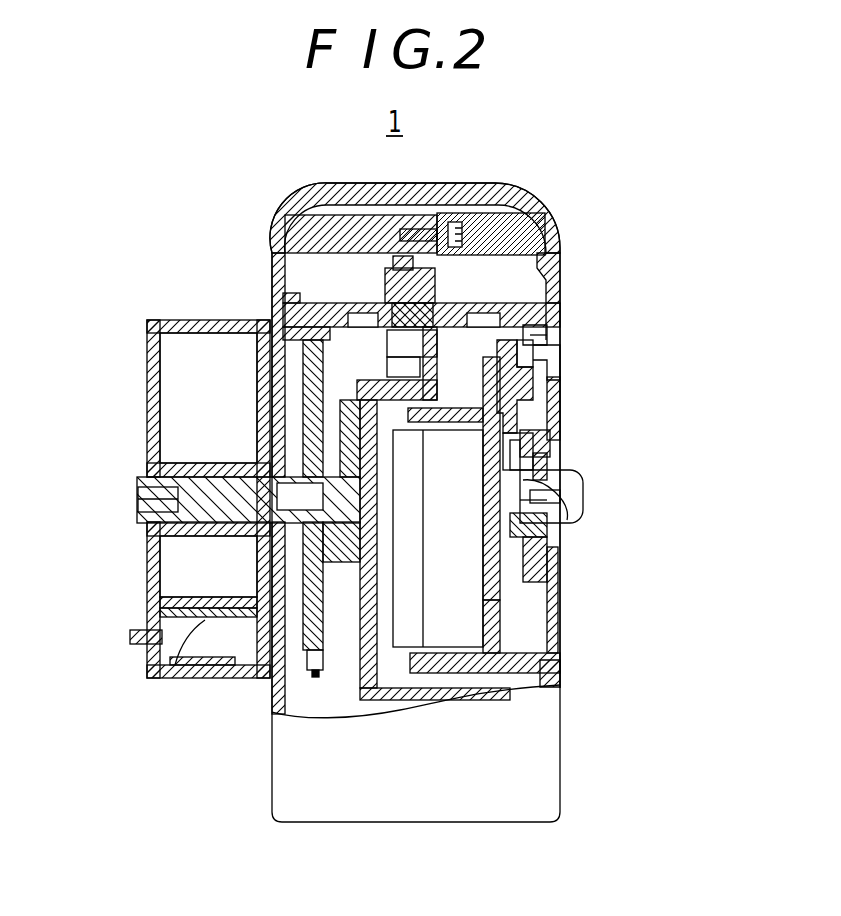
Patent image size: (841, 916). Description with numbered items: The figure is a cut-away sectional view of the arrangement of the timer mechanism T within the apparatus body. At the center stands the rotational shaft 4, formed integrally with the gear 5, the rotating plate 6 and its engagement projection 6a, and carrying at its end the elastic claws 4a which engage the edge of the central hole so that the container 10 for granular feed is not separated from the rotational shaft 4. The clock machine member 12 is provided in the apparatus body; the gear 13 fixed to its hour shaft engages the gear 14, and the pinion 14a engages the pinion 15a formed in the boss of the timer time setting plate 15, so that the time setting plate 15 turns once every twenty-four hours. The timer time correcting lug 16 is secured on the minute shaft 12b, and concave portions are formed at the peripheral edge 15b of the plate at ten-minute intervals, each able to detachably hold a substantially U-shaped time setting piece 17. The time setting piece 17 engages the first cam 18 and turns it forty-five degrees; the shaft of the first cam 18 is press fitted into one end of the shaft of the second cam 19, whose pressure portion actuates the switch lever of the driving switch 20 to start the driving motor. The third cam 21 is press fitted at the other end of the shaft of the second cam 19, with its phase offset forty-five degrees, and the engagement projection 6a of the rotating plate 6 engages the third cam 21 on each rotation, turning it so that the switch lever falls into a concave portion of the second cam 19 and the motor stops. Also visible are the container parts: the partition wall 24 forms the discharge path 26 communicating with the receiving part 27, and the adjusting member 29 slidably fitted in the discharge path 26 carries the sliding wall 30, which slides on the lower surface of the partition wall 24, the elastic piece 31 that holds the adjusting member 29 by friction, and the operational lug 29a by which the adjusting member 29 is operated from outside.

The rotational shaft 4 is at (197, 483).
The elastic claws 4a is at (137, 496).
The gear 5 is at (328, 582).
The rotating plate 6 is at (280, 674).
The engagement projection 6a is at (320, 678).
The container 10 is at (155, 318).
The clock machine member 12 is at (430, 618).
The minute shaft 12b is at (547, 540).
The gear 13 is at (548, 573).
The gear 14 is at (560, 385).
The pinion 14a is at (557, 402).
The timer time setting plate 15 is at (553, 413).
The pinion 15a is at (553, 448).
The peripheral edge 15b is at (557, 347).
The timer time correcting lug 16 is at (563, 502).
The time setting piece 17 is at (555, 343).
The first cam 18 is at (553, 258).
The second cam 19 is at (427, 288).
The driving switch 20 is at (387, 275).
The third cam 21 is at (270, 297).
The partition wall 24 is at (175, 665).
The discharge path 26 is at (230, 660).
The receiving part 27 is at (177, 365).
The adjusting member 29 is at (163, 622).
The operational lug 29a is at (130, 642).
The sliding wall 30 is at (152, 662).
The elastic piece 31 is at (206, 662).
The timer mechanism T is at (570, 309).